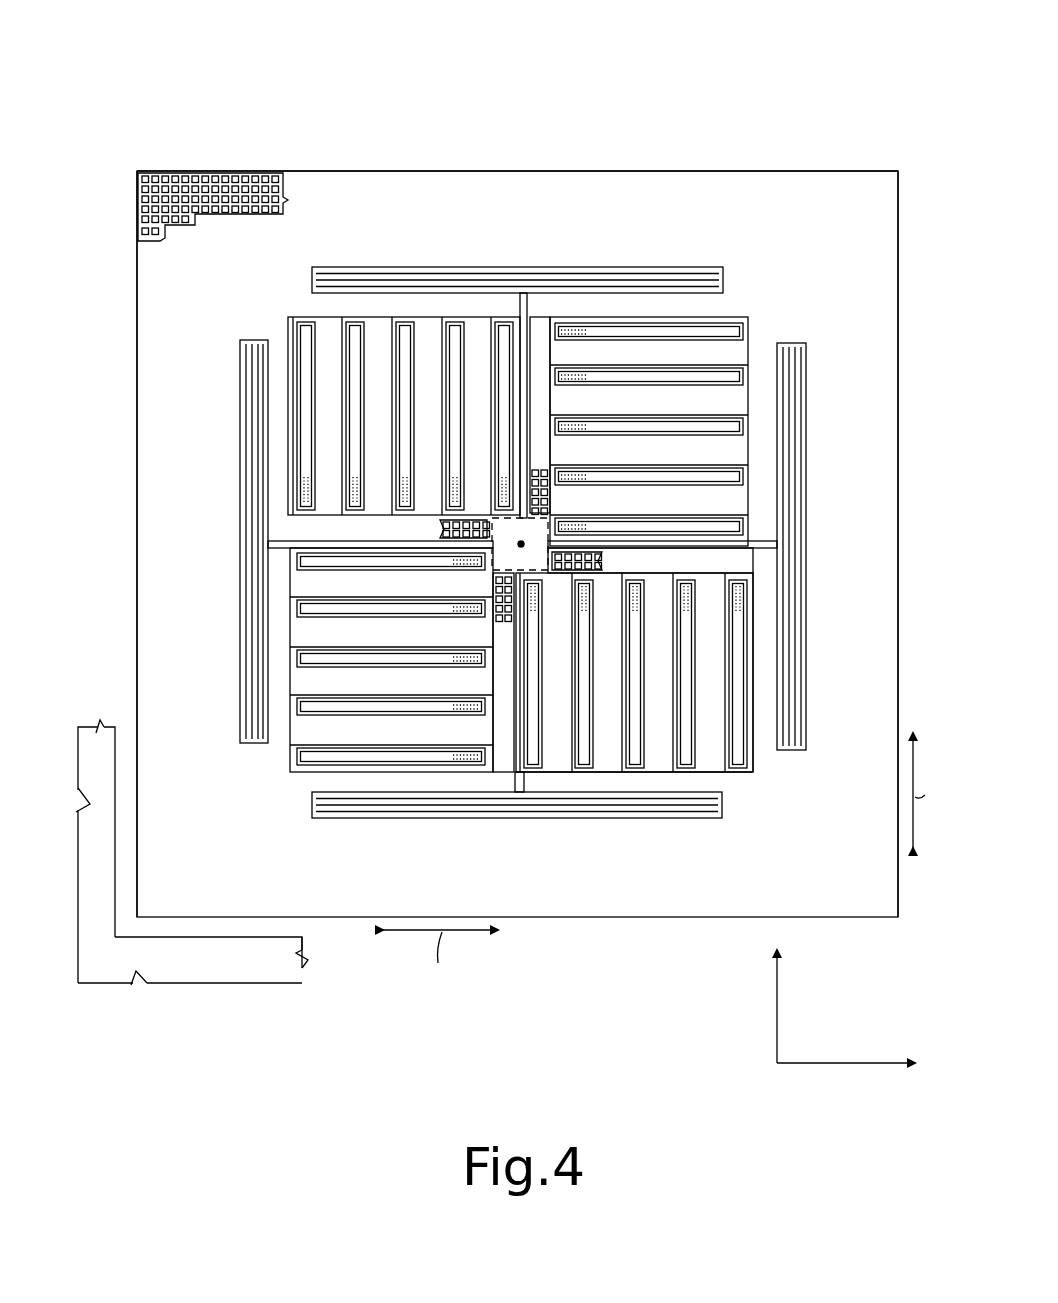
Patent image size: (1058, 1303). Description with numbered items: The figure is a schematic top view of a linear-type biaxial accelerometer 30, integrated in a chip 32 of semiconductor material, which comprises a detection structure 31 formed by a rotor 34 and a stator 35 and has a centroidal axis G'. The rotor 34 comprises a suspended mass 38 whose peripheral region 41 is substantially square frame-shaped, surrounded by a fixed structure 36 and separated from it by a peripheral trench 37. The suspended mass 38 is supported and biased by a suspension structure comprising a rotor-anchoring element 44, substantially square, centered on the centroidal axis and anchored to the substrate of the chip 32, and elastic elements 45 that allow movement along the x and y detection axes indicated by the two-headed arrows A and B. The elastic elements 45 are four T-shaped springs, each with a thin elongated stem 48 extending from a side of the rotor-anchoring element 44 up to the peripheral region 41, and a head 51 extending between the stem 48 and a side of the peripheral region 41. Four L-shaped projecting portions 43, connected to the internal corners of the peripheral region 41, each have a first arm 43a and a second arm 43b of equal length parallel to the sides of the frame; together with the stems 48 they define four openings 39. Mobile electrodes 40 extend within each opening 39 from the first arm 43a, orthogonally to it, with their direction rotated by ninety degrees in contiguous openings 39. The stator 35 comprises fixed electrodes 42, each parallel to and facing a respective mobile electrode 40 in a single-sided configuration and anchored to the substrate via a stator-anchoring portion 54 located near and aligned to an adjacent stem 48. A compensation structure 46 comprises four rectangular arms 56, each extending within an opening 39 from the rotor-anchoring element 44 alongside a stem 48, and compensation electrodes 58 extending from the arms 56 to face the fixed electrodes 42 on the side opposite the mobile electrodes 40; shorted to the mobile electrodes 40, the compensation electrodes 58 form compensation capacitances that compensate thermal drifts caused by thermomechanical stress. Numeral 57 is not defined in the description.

The biaxial accelerometer 30 is at (203, 107).
The detection structure 31 is at (452, 155).
The chip 32 is at (72, 935).
The rotor 34 is at (811, 165).
The stator 35 is at (744, 768).
The fixed structure 36 is at (218, 973).
The peripheral trench 37 is at (273, 924).
The suspended mass 38 is at (325, 195).
The openings 39 is at (668, 762).
The mobile electrodes 40 is at (745, 324).
The peripheral region 41 is at (147, 314).
The fixed electrodes 42 is at (728, 377).
The projecting portions 43 is at (734, 790).
The first arm 43a is at (605, 783).
The second arm 43b is at (765, 668).
The rotor-anchoring element 44 is at (490, 568).
The elastic elements 45 is at (527, 790).
The compensation structure 46 is at (742, 559).
The stem 48 is at (520, 308).
The head 51 is at (593, 270).
The stator-anchoring portion 54 is at (586, 328).
The arms 56 is at (305, 530).
The center plate 57 is at (543, 317).
The compensation electrodes 58 is at (293, 457).